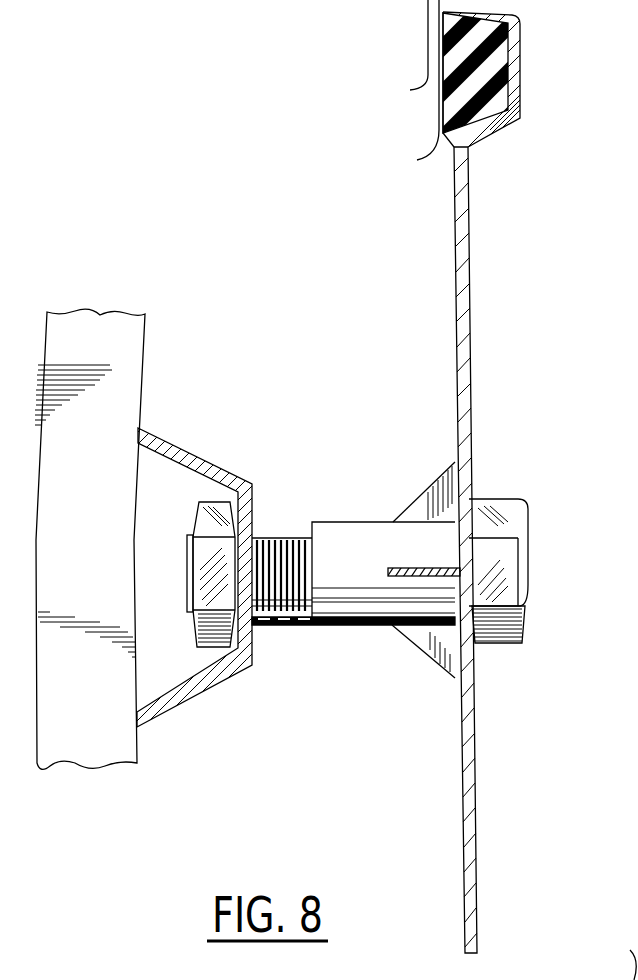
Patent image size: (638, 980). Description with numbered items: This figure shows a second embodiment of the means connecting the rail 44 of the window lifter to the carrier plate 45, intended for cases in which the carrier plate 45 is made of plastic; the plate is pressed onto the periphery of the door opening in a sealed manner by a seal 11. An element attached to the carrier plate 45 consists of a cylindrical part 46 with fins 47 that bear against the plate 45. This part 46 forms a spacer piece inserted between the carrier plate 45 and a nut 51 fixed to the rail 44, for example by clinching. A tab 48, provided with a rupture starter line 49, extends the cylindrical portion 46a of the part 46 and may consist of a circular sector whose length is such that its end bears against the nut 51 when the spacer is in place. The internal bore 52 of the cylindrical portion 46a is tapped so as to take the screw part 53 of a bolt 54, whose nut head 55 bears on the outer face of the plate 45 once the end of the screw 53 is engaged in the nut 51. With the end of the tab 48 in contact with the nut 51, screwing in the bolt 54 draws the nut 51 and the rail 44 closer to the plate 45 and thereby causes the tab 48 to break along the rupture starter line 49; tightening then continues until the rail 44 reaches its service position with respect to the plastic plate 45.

The seal 11 is at (508, 85).
The rail 44 is at (100, 315).
The carrier plate 45 is at (470, 332).
The cylindrical part 46 is at (427, 478).
The cylindrical portion 46a is at (408, 522).
The fins 47 is at (425, 638).
The tab 48 is at (272, 622).
The rupture starter line 49 is at (312, 623).
The nut 51 is at (205, 500).
The internal bore 52 is at (619, 956).
The screw part 53 is at (278, 540).
The bolt 54 is at (540, 537).
The nut head 55 is at (533, 605).